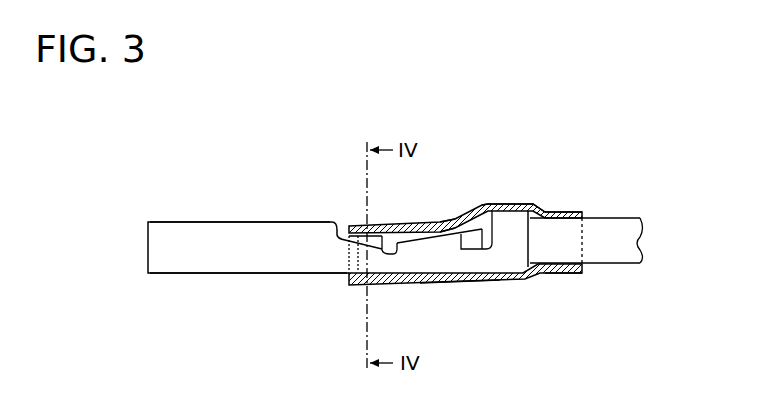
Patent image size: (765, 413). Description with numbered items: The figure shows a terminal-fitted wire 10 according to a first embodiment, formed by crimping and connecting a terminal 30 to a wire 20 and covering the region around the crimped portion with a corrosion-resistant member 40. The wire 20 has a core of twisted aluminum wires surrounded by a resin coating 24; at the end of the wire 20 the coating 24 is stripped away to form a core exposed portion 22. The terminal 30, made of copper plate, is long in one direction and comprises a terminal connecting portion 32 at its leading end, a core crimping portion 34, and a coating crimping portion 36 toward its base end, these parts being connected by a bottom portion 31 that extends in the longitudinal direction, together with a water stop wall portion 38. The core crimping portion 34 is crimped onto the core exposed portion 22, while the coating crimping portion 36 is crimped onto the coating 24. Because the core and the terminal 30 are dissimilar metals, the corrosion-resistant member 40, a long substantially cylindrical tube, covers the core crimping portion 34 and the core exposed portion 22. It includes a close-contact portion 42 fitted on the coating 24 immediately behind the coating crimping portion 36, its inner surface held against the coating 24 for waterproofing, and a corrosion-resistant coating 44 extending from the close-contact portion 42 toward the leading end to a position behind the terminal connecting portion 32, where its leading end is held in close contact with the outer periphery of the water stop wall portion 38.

The terminal-fitted wire 10 is at (181, 164).
The wire 20 is at (633, 211).
The core exposed portion 22 is at (387, 240).
The coating 24 is at (623, 264).
The terminal 30 is at (152, 214).
The bottom portion 31 is at (313, 275).
The terminal connecting portion 32 is at (243, 222).
The core crimping portion 34 is at (420, 240).
The coating crimping portion 36 is at (505, 207).
The water stop wall portion 38 is at (348, 258).
The corrosion-resistant member 40 is at (488, 285).
The close-contact portion 42 is at (558, 211).
The corrosion-resistant coating 44 is at (448, 221).